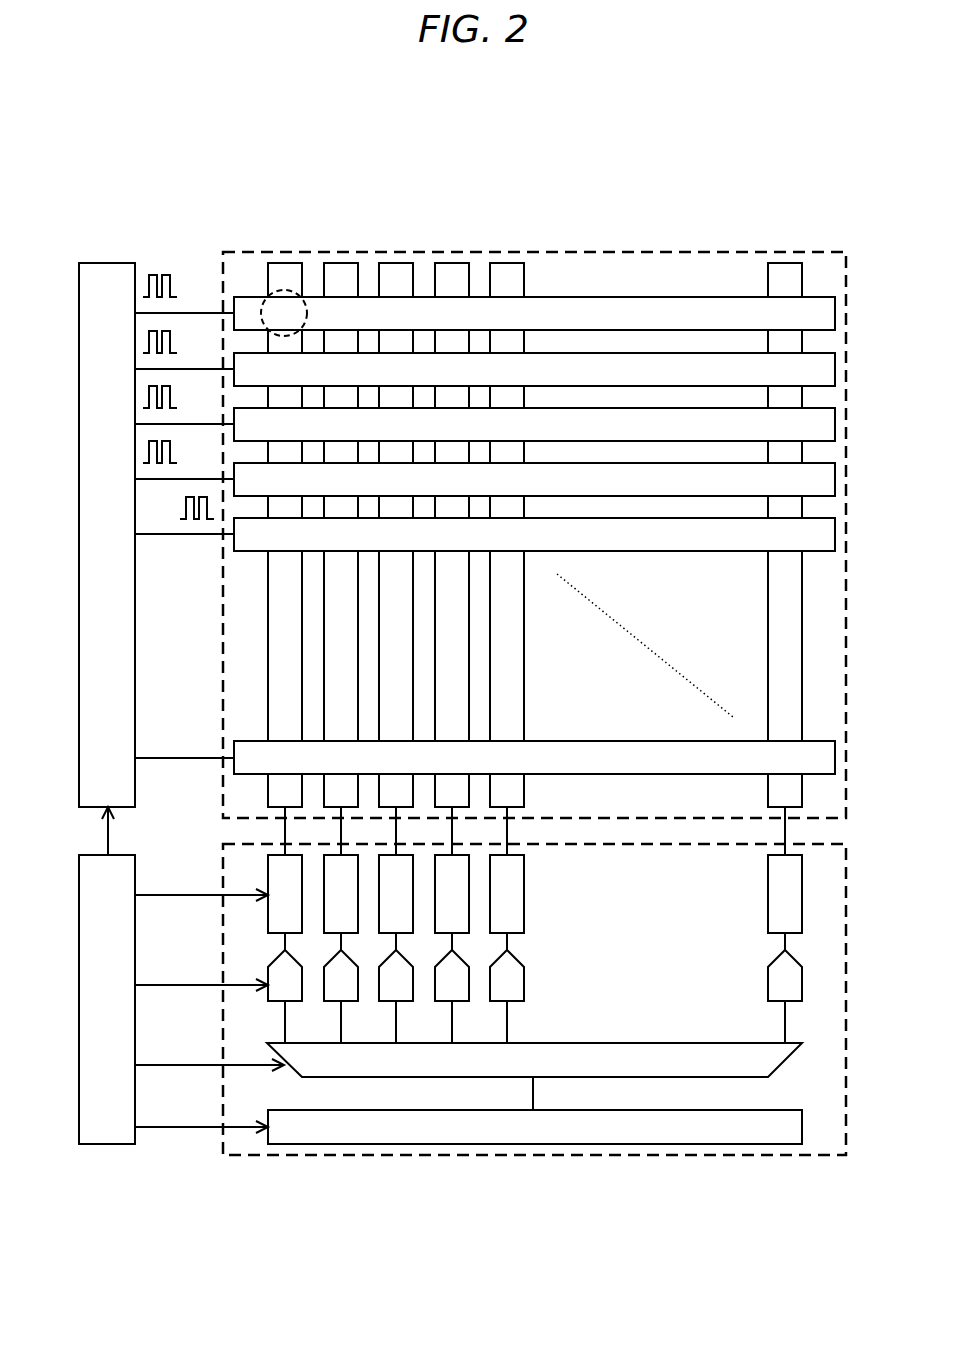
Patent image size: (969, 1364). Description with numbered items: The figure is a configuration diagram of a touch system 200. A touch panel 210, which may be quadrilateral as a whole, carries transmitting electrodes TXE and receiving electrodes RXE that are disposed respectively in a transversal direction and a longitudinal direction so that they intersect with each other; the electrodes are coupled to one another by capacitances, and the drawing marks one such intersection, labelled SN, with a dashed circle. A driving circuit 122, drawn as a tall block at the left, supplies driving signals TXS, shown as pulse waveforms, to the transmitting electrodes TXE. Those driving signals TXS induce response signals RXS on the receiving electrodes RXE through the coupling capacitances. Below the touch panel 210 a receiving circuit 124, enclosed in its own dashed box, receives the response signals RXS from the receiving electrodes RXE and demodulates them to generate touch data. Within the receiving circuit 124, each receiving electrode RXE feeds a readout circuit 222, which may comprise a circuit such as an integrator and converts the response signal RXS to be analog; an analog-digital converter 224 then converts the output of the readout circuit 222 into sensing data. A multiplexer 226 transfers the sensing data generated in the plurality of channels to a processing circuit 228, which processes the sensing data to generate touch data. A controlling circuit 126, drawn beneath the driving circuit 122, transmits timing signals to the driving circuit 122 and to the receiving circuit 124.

The touch system 200 is at (796, 227).
The touch panel 210 is at (229, 252).
The driving circuit 122 is at (101, 262).
The receiving circuit 124 is at (260, 1156).
The controlling circuit 126 is at (110, 1146).
The readout circuit 222 is at (268, 875).
The analog-digital converter 224 is at (268, 972).
The multiplexer 226 is at (268, 1043).
The processing circuit 228 is at (435, 1145).
The transmitting electrodes TXE is at (585, 297).
The receiving electrodes RXE is at (294, 263).
The sensing node SN is at (304, 298).
The driving signals TXS is at (178, 381).
The response signals RXS is at (507, 831).